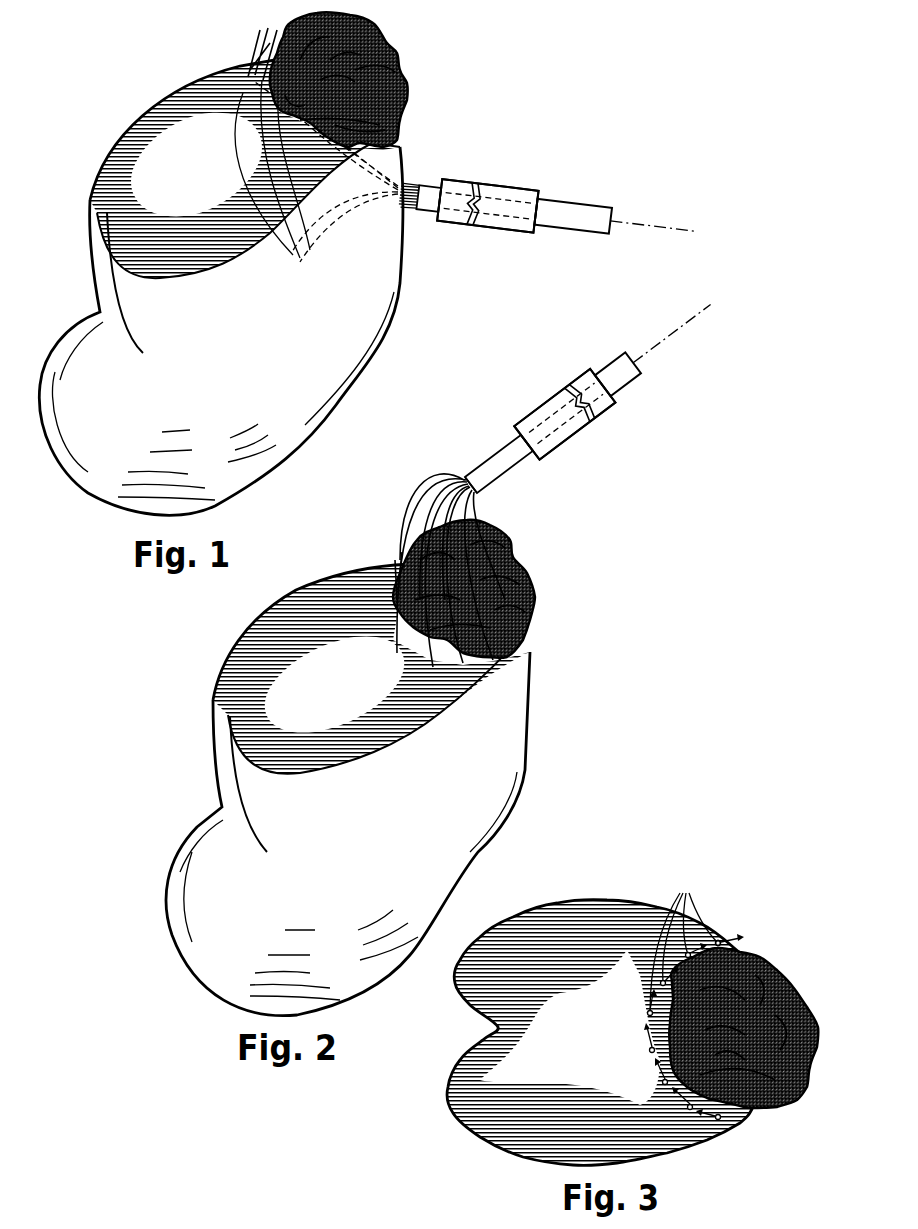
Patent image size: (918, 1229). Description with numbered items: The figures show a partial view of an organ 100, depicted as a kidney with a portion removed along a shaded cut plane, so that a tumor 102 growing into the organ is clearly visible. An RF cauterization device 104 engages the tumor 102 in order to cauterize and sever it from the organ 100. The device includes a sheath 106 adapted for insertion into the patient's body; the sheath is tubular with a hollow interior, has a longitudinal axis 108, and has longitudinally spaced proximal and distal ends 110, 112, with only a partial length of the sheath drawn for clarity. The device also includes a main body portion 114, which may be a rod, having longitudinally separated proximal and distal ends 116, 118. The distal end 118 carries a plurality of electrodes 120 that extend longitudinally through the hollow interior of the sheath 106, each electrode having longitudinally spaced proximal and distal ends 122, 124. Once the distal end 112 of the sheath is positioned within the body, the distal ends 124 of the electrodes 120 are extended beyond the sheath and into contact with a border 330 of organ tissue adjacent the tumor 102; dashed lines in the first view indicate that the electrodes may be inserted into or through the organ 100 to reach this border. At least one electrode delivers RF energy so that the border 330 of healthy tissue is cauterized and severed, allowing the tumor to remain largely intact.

In FIG. 1, the organ 100 is at (265, 376).
In FIG. 2, the organ 100 is at (427, 817).
In FIG. 3, the organ 100 is at (587, 1022).
In FIG. 1, the tumor 102 is at (407, 64).
In FIG. 2, the tumor 102 is at (508, 548).
In FIG. 3, the tumor 102 is at (770, 1059).
In FIG. 1, the RF cauterization device 104 is at (407, 295).
In FIG. 2, the RF cauterization device 104 is at (560, 592).
In FIG. 1, the sheath 106 is at (510, 178).
In FIG. 2, the sheath 106 is at (572, 375).
In FIG. 1, the longitudinal axis 108 is at (658, 222).
In FIG. 2, the longitudinal axis 108 is at (660, 343).
In FIG. 1, the proximal end of the sheath 110 is at (528, 243).
In FIG. 2, the proximal end of the sheath 110 is at (615, 425).
In FIG. 1, the distal end of the sheath 112 is at (448, 232).
In FIG. 2, the distal end of the sheath 112 is at (550, 466).
In FIG. 1, the main body portion 114 is at (459, 183).
In FIG. 2, the main body portion 114 is at (548, 402).
In FIG. 1, the proximal end of the main body portion 116 is at (572, 196).
In FIG. 2, the proximal end of the main body portion 116 is at (632, 390).
In FIG. 1, the distal end of the main body portion 118 is at (410, 172).
In FIG. 2, the distal end of the main body portion 118 is at (467, 449).
In FIG. 1, the electrodes 120 is at (316, 184).
In FIG. 2, the electrodes 120 is at (413, 505).
In FIG. 3, the electrodes 120 is at (694, 991).
In FIG. 1, the proximal end of the electrode 122 is at (378, 212).
In FIG. 2, the proximal end of the electrode 122 is at (443, 476).
In FIG. 1, the distal end of the electrode 124 is at (252, 43).
In FIG. 2, the distal end of the electrode 124 is at (370, 560).
In FIG. 3, the border 330 is at (720, 940).